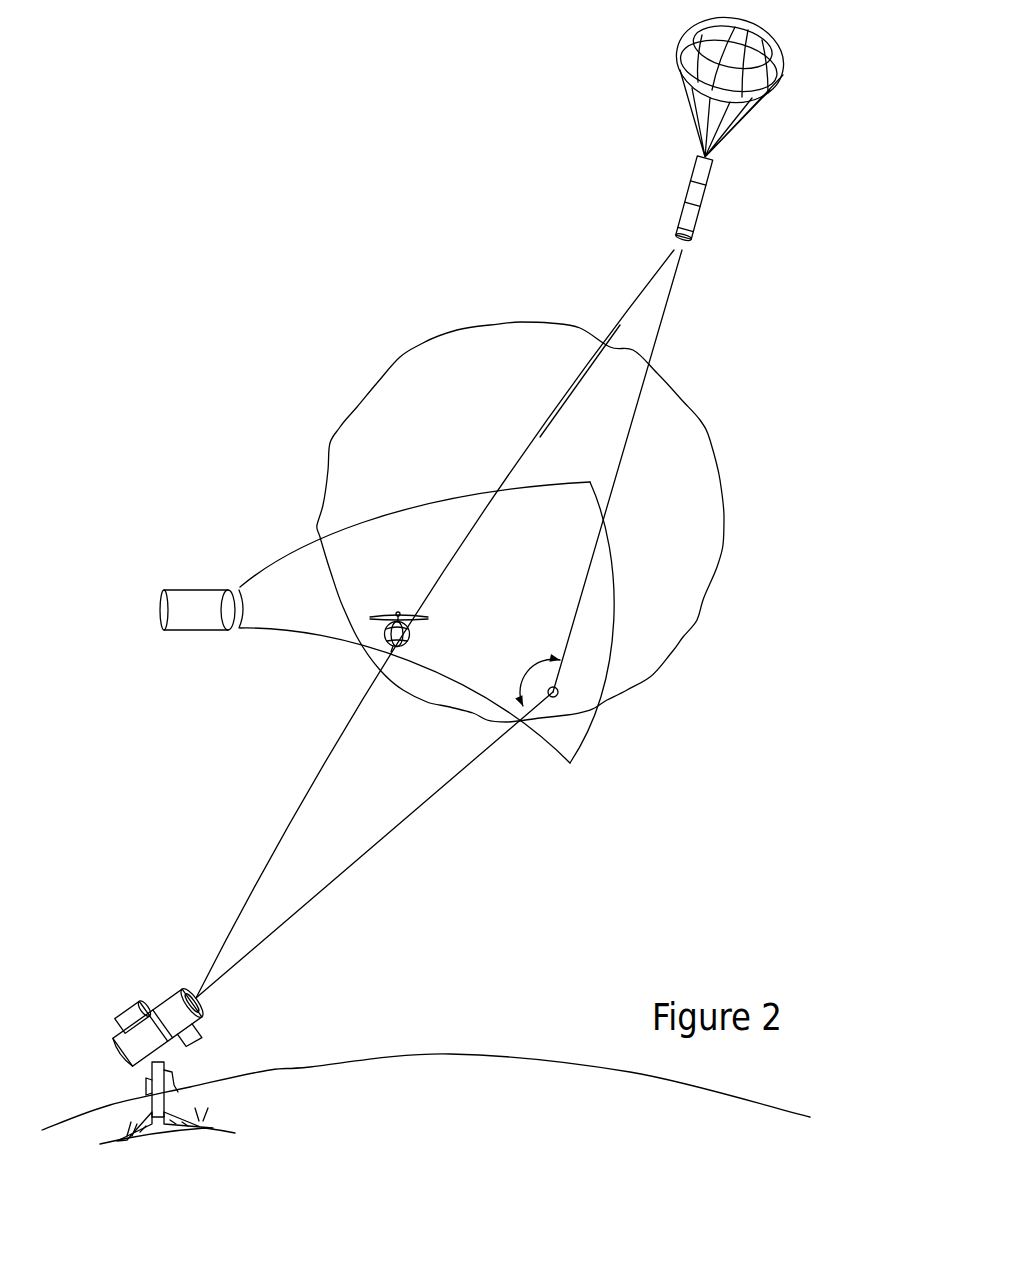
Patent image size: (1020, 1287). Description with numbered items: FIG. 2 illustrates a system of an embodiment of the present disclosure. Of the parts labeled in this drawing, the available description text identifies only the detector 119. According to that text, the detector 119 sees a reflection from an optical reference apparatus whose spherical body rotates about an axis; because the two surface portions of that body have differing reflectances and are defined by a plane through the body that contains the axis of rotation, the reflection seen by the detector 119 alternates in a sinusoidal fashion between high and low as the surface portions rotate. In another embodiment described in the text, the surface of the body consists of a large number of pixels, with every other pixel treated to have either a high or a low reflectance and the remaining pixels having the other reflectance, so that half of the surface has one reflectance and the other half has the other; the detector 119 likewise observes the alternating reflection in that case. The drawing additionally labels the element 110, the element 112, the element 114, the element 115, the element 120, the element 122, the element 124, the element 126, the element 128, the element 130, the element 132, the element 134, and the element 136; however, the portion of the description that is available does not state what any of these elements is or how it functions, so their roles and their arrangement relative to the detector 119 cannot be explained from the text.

The system 110 is at (322, 283).
The camera 112 is at (180, 623).
The field of view 114 is at (417, 546).
The line of sight 115 is at (400, 503).
The detector 119 is at (196, 1045).
The cloud 120 is at (700, 420).
The sight 122 is at (142, 1015).
The projectile with parachute 124 is at (700, 192).
The target point 126 is at (558, 694).
The helicopter 128 is at (363, 640).
The descent path 130 is at (643, 387).
The line to target 132 is at (447, 788).
The trajectory apex 134 is at (580, 380).
The trajectory 136 is at (290, 825).